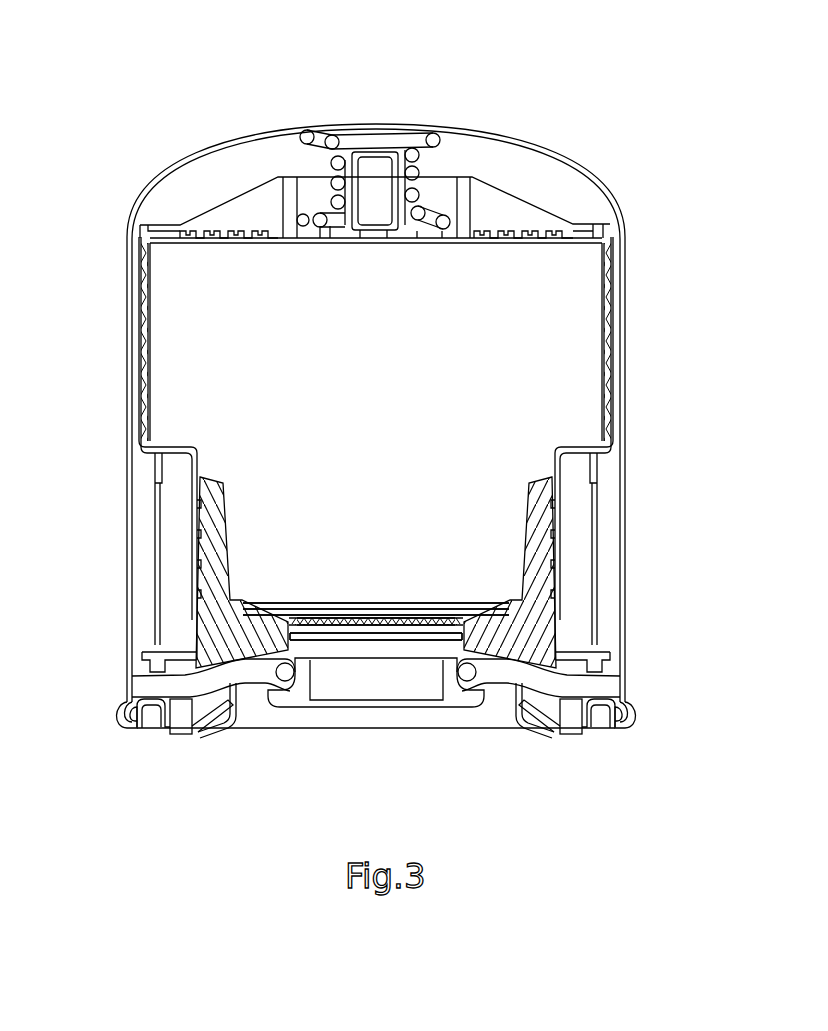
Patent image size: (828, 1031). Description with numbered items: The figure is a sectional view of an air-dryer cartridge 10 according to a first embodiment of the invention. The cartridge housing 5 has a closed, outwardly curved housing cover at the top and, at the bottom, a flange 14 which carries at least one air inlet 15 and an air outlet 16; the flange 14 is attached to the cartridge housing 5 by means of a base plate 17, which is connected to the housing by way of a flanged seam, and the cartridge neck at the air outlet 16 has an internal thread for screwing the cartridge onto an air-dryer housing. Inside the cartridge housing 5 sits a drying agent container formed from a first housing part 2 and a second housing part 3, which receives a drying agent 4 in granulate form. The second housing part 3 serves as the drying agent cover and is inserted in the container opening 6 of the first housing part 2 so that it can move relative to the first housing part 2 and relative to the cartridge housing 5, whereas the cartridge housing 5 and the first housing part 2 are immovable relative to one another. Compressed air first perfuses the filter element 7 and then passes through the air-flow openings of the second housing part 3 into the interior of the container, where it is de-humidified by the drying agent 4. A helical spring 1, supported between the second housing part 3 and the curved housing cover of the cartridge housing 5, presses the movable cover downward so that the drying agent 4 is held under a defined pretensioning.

The air-dryer cartridge 10 is at (163, 98).
The helical spring 1 is at (368, 134).
The first housing part 2 is at (612, 412).
The second housing part 3 is at (506, 226).
The drying agent 4 is at (171, 357).
The cartridge housing 5 is at (619, 212).
The container opening 6 is at (150, 296).
The filter element 7 is at (163, 528).
The flange 14 is at (140, 684).
The air inlet 15 is at (247, 690).
The air outlet 16 is at (414, 680).
The base plate 17 is at (123, 731).